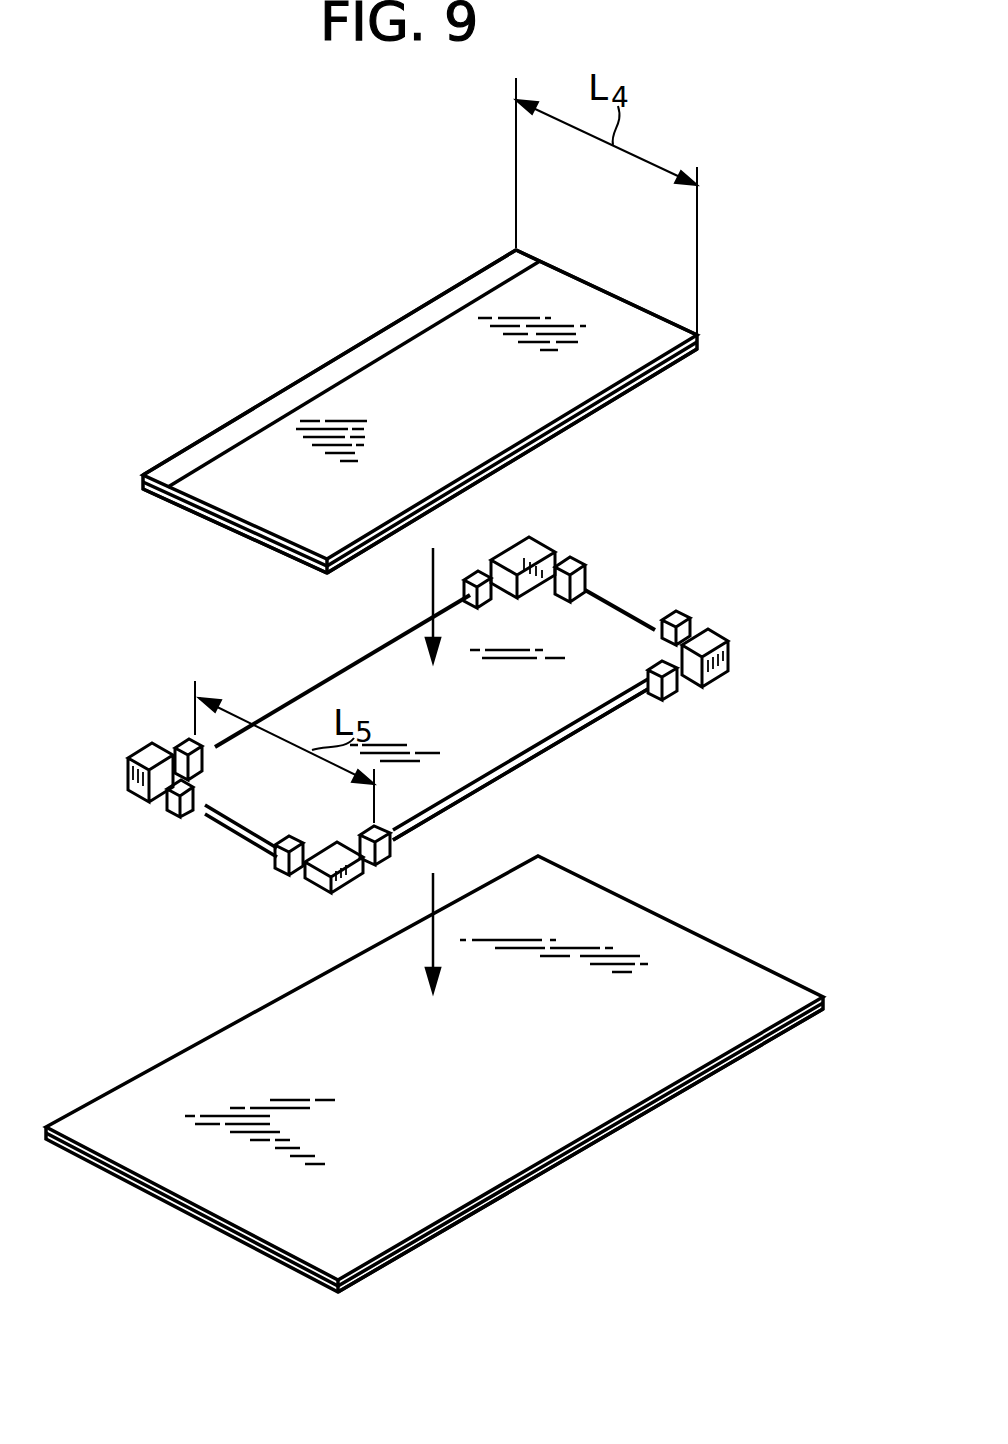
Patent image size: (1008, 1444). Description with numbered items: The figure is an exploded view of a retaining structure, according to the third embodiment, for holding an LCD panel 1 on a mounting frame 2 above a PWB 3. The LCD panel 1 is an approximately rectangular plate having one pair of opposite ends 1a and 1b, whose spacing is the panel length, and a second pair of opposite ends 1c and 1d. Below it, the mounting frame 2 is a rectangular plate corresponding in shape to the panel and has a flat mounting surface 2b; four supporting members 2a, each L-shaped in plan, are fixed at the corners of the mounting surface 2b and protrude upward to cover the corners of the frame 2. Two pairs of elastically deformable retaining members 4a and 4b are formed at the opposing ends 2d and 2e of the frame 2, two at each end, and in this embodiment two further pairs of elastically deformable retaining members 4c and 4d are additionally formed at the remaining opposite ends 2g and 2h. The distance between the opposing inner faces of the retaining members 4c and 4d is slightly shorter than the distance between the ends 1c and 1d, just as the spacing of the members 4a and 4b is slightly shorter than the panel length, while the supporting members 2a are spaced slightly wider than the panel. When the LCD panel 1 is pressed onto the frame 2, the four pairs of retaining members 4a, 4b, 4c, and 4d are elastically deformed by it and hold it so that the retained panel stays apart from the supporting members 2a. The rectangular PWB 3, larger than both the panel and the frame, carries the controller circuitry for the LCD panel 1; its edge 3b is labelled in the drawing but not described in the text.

The LCD panel 1 is at (286, 447).
The end of LCD panel 1a is at (216, 518).
The end of LCD panel 1b is at (637, 303).
The end of LCD panel 1c is at (377, 338).
The end of LCD panel 1d is at (605, 405).
The mounting frame 2 is at (310, 726).
The supporting member 2a is at (525, 545).
The mounting surface 2b is at (575, 722).
The end of mounting frame 2d is at (228, 830).
The end of mounting frame 2e is at (615, 602).
The end of mounting frame 2g is at (318, 693).
The end of mounting frame 2h is at (498, 778).
The PWB 3 is at (210, 1082).
The lower right edge of lower plate 3b is at (575, 1120).
The retaining member 4a is at (575, 560).
The retaining member 4b is at (680, 613).
The retaining member 4c is at (185, 740).
The retaining member 4d is at (472, 568).